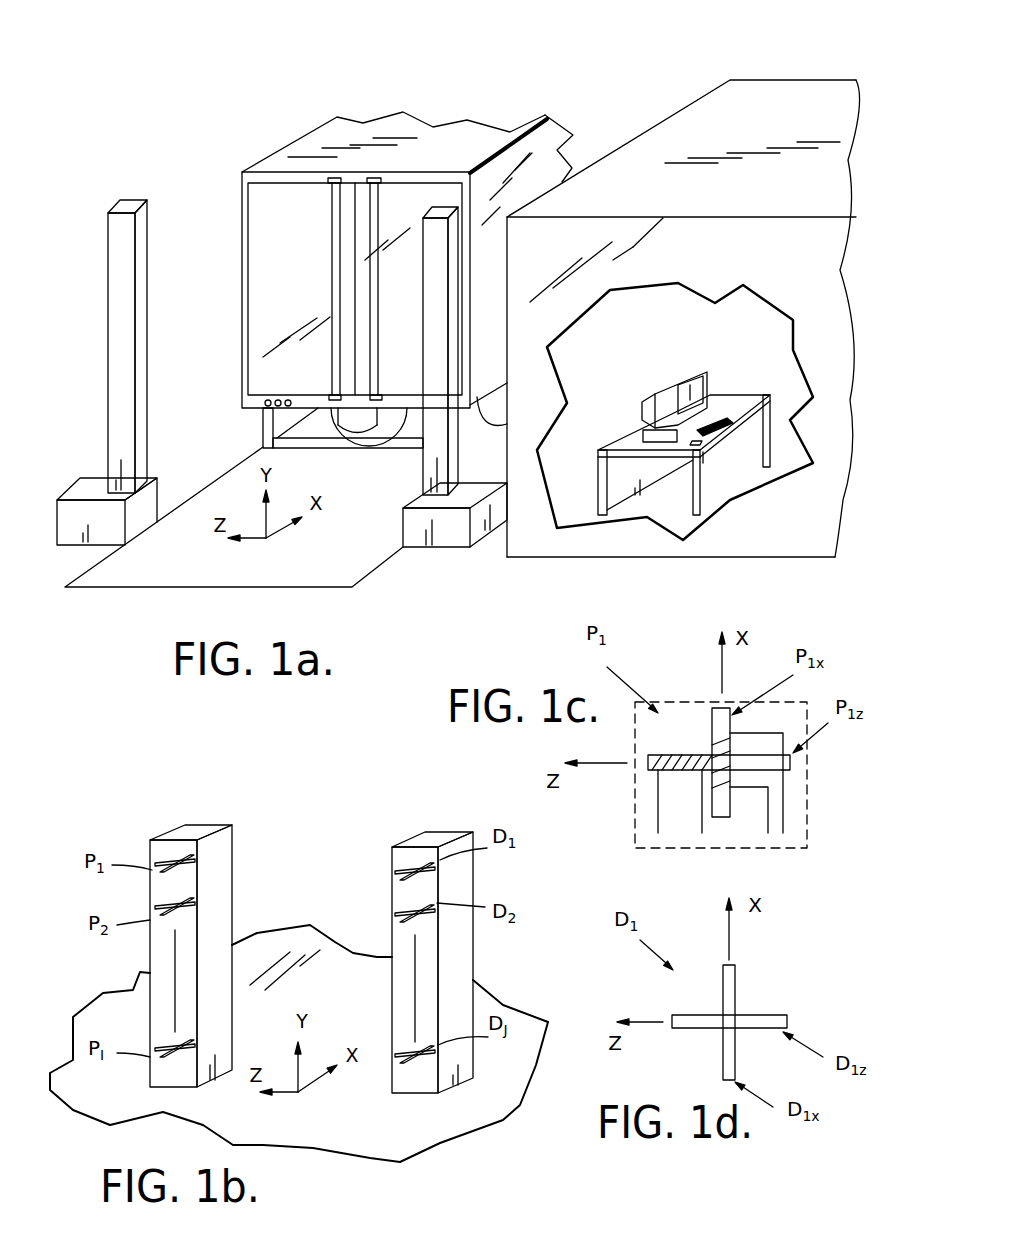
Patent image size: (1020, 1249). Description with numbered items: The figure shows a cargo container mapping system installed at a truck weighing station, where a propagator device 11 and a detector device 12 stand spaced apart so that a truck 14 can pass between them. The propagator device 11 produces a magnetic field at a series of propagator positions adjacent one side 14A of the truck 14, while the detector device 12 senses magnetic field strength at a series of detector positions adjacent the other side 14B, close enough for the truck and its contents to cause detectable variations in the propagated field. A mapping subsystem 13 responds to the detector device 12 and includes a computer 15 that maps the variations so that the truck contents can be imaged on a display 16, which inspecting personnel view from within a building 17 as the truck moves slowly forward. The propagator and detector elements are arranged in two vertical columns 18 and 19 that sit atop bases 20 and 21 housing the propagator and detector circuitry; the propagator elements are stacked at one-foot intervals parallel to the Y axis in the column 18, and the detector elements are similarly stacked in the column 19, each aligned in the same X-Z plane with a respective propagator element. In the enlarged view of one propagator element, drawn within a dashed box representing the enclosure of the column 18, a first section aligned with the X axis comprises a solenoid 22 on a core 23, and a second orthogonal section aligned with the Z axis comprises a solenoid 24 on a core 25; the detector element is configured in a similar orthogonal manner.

In FIG. 1A, the propagator device 11 is at (134, 191).
In FIG. 1A, the detector device 12 is at (439, 198).
In FIG. 1A, the mapping subsystem 13 is at (770, 352).
In FIG. 1A, the truck 14 is at (270, 313).
In FIG. 1A, the side of truck 14A is at (242, 188).
In FIG. 1A, the side of truck 14B is at (567, 158).
In FIG. 1A, the computer 15 is at (643, 428).
In FIG. 1A, the display 16 is at (658, 392).
In FIG. 1A, the building 17 is at (730, 80).
In FIG. 1A, the vertical column 18 is at (115, 277).
In FIG. 1B, the vertical column 18 is at (183, 833).
In FIG. 1A, the vertical column 19 is at (432, 463).
In FIG. 1B, the vertical column 19 is at (418, 838).
In FIG. 1A, the base 20 is at (90, 485).
In FIG. 1A, the base 21 is at (452, 537).
In FIG. 1C, the solenoid 22 is at (783, 814).
In FIG. 1C, the core 23 is at (723, 808).
In FIG. 1C, the solenoid 24 is at (658, 818).
In FIG. 1C, the core 25 is at (657, 763).